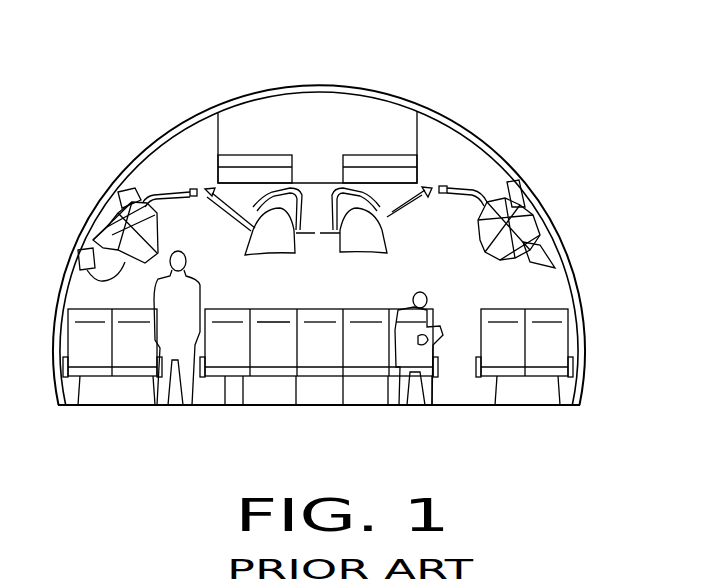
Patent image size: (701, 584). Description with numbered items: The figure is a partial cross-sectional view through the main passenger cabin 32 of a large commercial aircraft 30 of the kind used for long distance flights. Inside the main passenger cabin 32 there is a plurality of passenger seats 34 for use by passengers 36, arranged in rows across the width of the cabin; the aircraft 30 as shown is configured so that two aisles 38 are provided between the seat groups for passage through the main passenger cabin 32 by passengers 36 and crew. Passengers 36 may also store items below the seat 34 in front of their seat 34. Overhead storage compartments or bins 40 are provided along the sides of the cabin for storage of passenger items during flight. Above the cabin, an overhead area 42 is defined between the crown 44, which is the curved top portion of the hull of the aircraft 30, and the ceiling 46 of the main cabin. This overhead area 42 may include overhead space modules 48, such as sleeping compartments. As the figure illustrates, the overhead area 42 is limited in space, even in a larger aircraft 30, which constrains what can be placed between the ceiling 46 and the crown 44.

The aircraft 30 is at (324, 211).
The main passenger cabin 32 is at (472, 280).
The passenger seats 34 is at (133, 352).
The passengers 36 is at (177, 405).
The aisles 38 is at (196, 407).
The overhead storage compartments or bins 40 is at (70, 276).
The overhead area 42 is at (328, 131).
The crown 44 is at (275, 88).
The ceiling 46 is at (180, 188).
The overhead space modules 48 is at (257, 171).